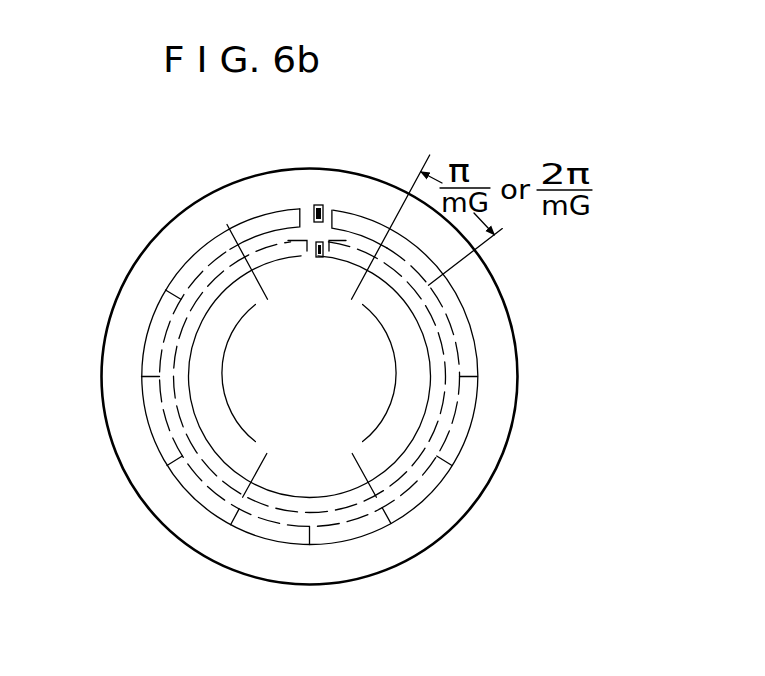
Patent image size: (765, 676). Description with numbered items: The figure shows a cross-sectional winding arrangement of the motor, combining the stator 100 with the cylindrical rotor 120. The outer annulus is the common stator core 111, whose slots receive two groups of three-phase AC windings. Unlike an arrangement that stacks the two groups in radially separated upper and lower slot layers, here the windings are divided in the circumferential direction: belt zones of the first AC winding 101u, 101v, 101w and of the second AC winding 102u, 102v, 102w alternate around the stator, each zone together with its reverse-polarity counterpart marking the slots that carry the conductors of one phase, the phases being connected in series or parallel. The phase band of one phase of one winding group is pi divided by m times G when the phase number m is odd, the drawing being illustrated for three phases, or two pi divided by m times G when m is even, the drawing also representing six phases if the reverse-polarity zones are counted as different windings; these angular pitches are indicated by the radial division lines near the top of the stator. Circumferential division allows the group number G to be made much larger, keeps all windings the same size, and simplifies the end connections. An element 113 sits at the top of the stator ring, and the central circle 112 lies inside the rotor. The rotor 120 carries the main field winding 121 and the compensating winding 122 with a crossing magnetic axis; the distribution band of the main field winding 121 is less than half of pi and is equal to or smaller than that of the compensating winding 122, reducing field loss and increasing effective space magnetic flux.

The stator 100 is at (386, 124).
The common stator core 111 is at (200, 213).
The shaft 112 is at (309, 372).
The position detecting element 113 is at (316, 205).
The cylindrical rotor 120 is at (333, 419).
The main field winding 121 is at (363, 304).
The compensating winding 122 is at (183, 382).
The first AC winding (phase u) 101u is at (361, 219).
The first AC winding (phase v) 101v is at (420, 487).
The first AC winding (phase w) 101w is at (460, 332).
The second AC winding (phase u) 102u is at (423, 262).
The second AC winding (phase v) 102v is at (352, 530).
The second AC winding (phase w) 102w is at (160, 323).